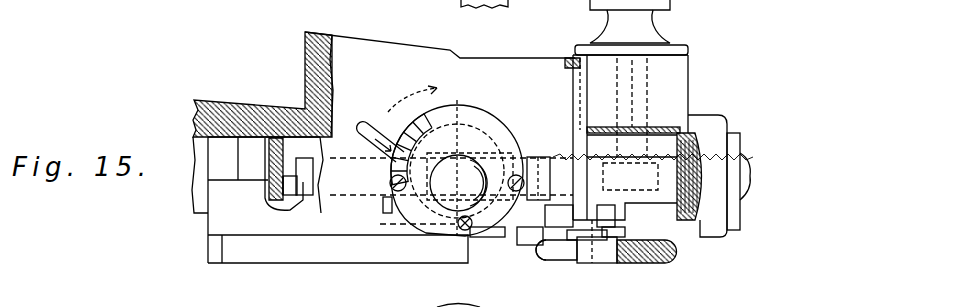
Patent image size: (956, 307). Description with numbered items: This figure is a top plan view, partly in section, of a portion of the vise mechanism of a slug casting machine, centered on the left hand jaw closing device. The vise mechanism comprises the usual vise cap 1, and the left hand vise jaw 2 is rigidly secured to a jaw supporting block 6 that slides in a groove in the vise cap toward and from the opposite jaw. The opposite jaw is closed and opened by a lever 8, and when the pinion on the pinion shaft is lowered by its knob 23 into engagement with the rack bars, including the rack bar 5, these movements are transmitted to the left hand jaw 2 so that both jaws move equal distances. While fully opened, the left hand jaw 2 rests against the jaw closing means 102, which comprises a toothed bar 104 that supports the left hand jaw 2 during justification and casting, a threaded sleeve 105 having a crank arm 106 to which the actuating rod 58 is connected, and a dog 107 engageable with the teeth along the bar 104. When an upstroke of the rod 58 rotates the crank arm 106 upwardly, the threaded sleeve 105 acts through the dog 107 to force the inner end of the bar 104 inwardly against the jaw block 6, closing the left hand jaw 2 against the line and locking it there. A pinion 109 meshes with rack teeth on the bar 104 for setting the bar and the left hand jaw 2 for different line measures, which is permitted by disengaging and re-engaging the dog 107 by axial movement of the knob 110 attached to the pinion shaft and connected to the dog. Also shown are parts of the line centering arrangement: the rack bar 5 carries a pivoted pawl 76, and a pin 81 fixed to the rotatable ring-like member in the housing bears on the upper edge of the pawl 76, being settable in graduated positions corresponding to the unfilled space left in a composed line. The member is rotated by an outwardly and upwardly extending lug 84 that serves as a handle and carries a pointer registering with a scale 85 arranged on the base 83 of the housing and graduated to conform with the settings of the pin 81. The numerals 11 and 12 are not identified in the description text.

The vise cap 1 is at (512, 36).
The left hand vise jaw 2 is at (282, 253).
The rack bar 5 is at (552, 217).
The jaw supporting block 6 is at (253, 213).
The lever 8 is at (608, 254).
The rod 11 is at (563, 232).
The block 12 is at (533, 245).
The knob 23 is at (470, 156).
The actuating rod 58 is at (612, 237).
The pawl 76 is at (502, 237).
The pin 81 is at (465, 230).
The base of the housing 83 is at (486, 128).
The lug 84 is at (378, 122).
The scale 85 is at (436, 118).
The jaw closing means 102 is at (664, 152).
The toothed bar 104 is at (299, 190).
The threaded sleeve 105 is at (652, 203).
The crank arm 106 is at (623, 244).
The dog 107 is at (577, 133).
The pinion 109 is at (658, 204).
The knob 110 is at (653, 28).